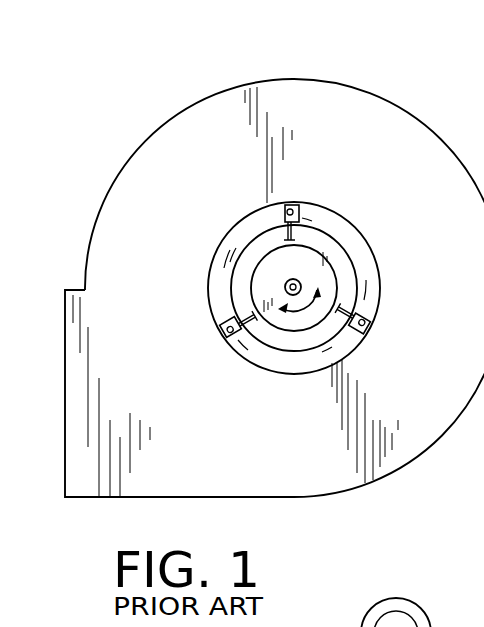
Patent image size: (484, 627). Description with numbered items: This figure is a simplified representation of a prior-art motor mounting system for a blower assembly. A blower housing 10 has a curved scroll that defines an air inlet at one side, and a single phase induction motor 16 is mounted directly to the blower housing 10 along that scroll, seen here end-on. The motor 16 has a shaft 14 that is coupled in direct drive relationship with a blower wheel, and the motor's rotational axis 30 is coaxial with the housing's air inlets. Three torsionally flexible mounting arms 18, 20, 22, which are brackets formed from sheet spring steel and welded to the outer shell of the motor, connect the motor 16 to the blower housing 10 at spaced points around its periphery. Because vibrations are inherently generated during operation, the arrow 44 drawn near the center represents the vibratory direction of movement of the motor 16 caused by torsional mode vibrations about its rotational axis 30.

The blower housing 10 is at (363, 92).
The shaft 14 is at (301, 286).
The single phase induction motor 16 is at (304, 272).
The torsionally flexible mounting arm 18 is at (294, 219).
The torsionally flexible mounting arm 20 is at (358, 326).
The torsionally flexible mounting arm 22 is at (224, 322).
The rotational axis 30 is at (286, 289).
The arrow 44 is at (303, 308).